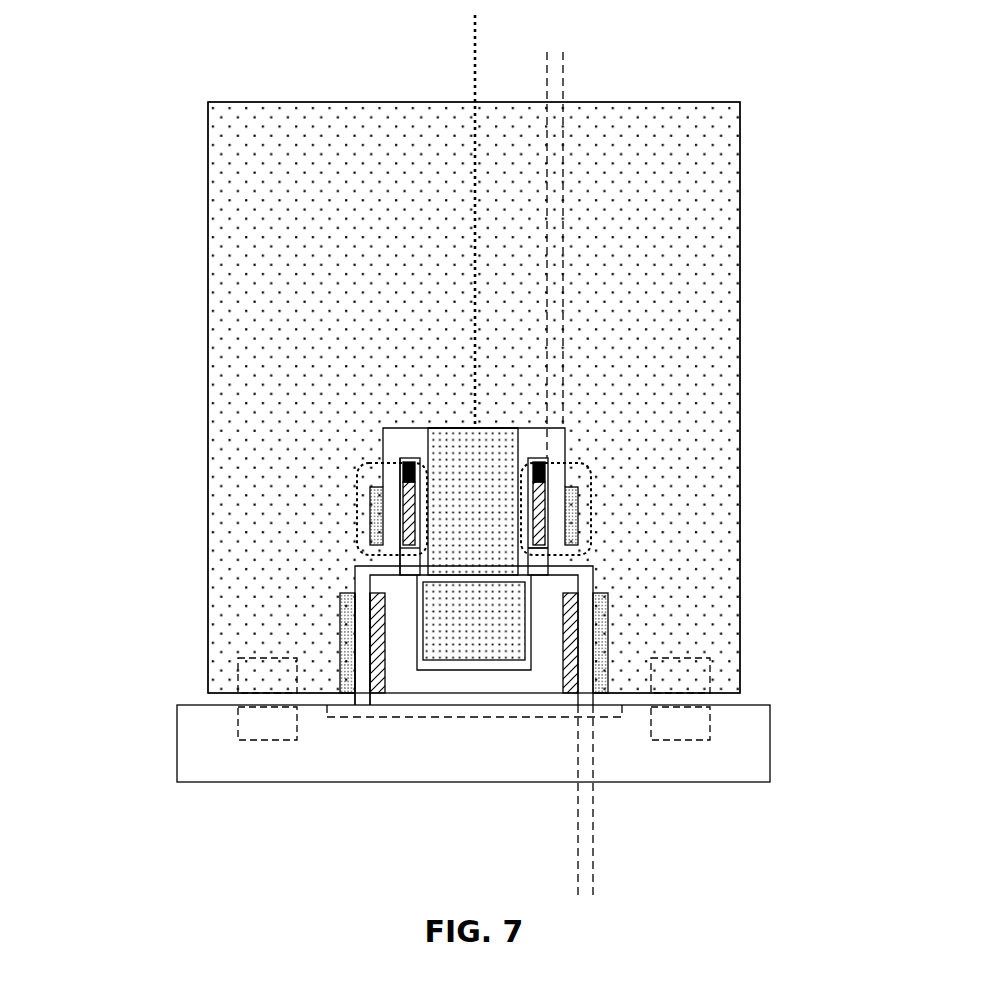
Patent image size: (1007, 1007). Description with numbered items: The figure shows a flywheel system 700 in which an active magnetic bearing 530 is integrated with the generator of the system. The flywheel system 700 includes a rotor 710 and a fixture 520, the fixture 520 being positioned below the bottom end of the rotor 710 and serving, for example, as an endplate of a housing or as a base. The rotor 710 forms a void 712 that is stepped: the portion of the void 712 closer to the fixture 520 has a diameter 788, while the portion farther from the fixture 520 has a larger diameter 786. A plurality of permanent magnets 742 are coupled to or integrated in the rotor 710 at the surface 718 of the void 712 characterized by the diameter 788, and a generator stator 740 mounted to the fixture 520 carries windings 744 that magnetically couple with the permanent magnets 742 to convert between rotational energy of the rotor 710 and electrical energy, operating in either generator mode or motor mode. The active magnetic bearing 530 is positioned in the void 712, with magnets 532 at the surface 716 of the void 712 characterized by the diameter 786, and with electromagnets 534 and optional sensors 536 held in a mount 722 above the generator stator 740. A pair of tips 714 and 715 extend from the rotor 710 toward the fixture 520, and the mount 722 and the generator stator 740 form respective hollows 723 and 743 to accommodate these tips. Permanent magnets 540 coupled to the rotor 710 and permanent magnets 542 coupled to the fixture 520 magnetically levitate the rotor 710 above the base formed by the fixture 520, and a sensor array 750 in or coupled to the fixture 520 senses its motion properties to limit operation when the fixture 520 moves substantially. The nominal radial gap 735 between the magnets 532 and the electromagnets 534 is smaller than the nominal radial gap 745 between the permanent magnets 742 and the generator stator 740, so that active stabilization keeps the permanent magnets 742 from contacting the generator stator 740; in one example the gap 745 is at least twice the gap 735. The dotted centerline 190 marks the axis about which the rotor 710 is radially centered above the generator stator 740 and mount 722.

The flywheel system 700 is at (118, 73).
The rotor 710 is at (216, 136).
The center axis 190 is at (474, 221).
The nominal radial gap 735 is at (502, 86).
The nominal radial gap 745 is at (532, 872).
The diameter 786 is at (452, 438).
The hollow 723 is at (424, 452).
The mount 722 is at (565, 439).
The active magnetic bearing 530 is at (575, 462).
The sensor 536 is at (403, 478).
The electromagnets 534 is at (405, 540).
The magnets 532 is at (372, 513).
The tip 714 is at (456, 511).
The tip 715 is at (457, 633).
The generator stator 740 is at (457, 697).
The hollow 743 is at (593, 565).
The permanent magnets 742 is at (340, 602).
The windings 744 is at (370, 642).
The permanent magnets 540 is at (250, 686).
The permanent magnets 542 is at (250, 734).
The fixture 520 is at (726, 768).
The void 712 is at (361, 690).
The surface 716 is at (403, 520).
The surface 718 is at (360, 667).
The sensor array 750 is at (485, 718).
The diameter 788 is at (540, 562).